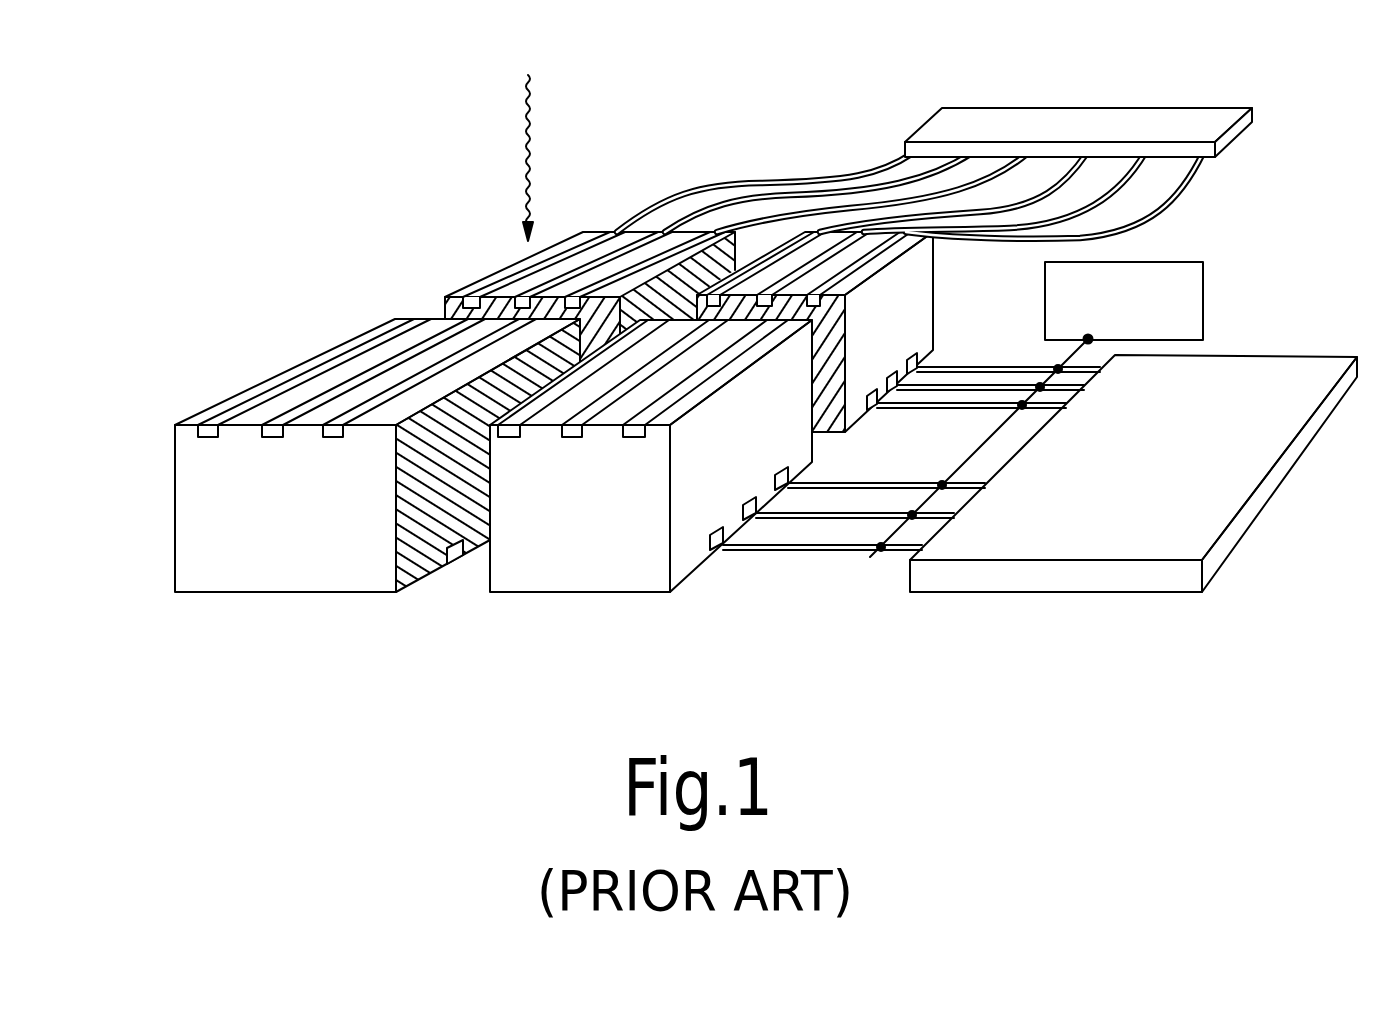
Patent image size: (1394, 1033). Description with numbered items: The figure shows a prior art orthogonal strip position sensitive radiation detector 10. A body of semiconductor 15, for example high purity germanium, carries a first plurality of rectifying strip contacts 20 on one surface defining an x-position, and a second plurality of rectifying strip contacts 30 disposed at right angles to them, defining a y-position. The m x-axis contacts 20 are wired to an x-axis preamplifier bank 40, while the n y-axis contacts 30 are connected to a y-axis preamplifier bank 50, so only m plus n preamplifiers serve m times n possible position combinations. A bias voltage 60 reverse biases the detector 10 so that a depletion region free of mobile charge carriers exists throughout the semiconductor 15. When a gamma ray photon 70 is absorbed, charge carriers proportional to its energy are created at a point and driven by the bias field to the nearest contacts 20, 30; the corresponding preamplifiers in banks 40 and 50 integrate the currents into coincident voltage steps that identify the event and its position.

The orthogonal strip position sensitive radiation detector 10 is at (637, 467).
The semiconductor body 15 is at (582, 577).
The x-axis rectifying strip contacts 20 is at (257, 403).
The y-axis rectifying strip contacts 30 is at (740, 550).
The x-axis preamplifier bank 40 is at (1217, 117).
The y-axis preamplifier bank 50 is at (1187, 537).
The bias voltage 60 is at (1203, 298).
The gamma ray photon 70 is at (528, 78).